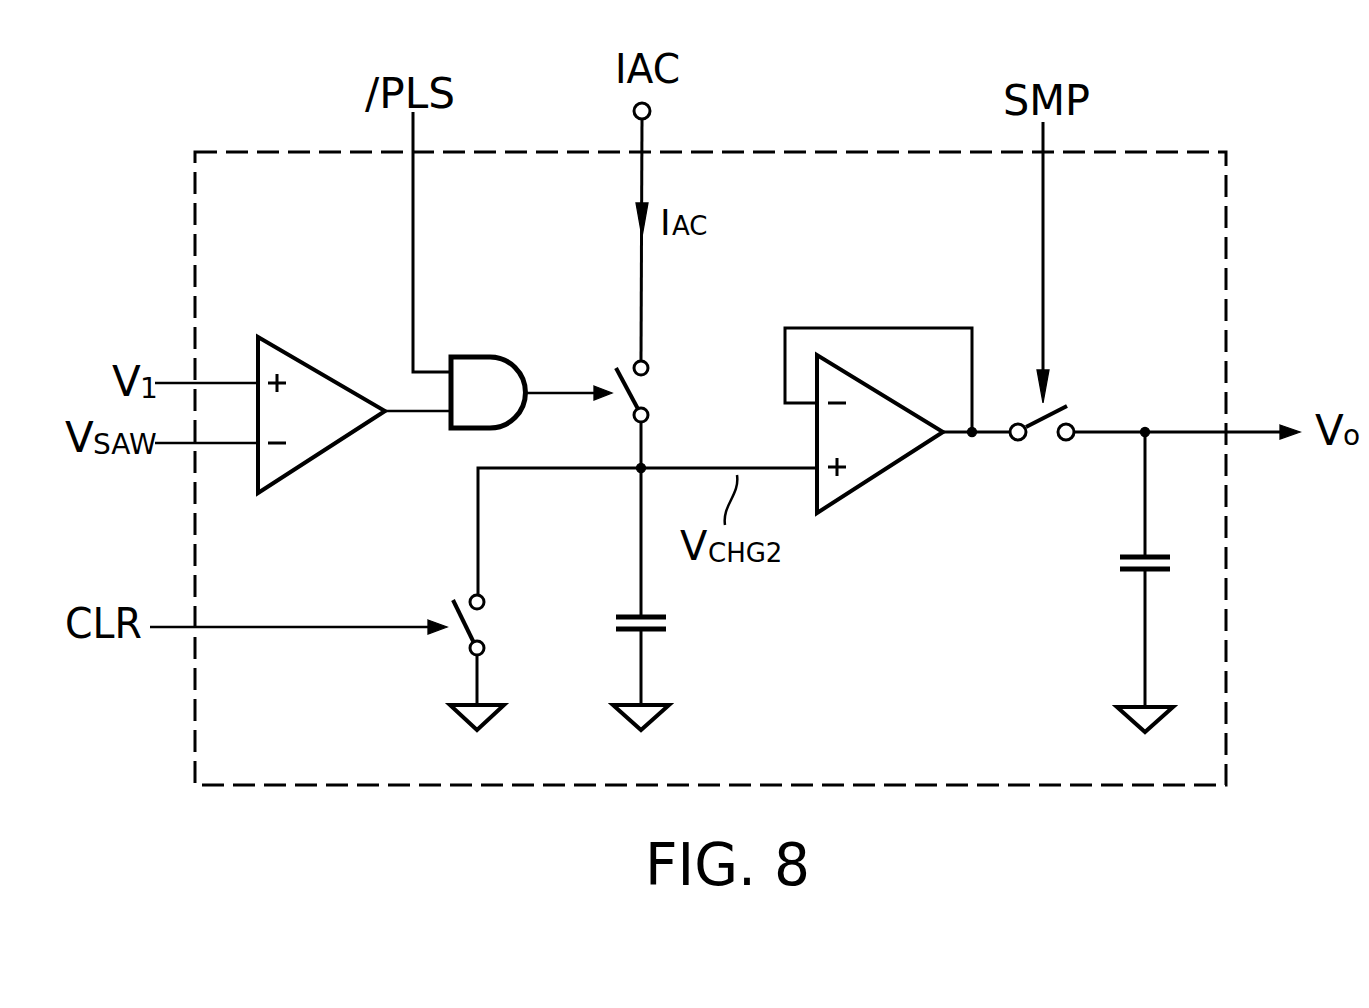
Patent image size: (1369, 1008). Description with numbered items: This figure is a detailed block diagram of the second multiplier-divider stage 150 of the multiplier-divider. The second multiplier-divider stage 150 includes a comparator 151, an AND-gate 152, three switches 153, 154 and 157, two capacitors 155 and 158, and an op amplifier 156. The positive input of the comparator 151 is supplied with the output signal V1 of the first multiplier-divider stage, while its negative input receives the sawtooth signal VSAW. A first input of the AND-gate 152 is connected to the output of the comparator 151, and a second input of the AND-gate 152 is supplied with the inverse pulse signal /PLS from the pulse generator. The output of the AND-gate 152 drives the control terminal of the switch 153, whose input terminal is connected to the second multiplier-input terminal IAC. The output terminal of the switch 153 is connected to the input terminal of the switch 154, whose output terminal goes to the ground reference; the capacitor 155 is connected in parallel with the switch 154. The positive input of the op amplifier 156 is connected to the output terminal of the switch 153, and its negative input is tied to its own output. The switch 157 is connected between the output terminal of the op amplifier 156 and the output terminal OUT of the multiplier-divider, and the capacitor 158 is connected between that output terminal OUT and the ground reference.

The second multiplier-divider stage 150 is at (1226, 213).
The comparator 151 is at (323, 345).
The AND-gate 152 is at (486, 345).
The switch 153 is at (657, 392).
The switch 154 is at (445, 598).
The capacitor 155 is at (667, 622).
The op amplifier (OPA) 156 is at (860, 495).
The switch 157 is at (1043, 460).
The capacitor 158 is at (1172, 558).